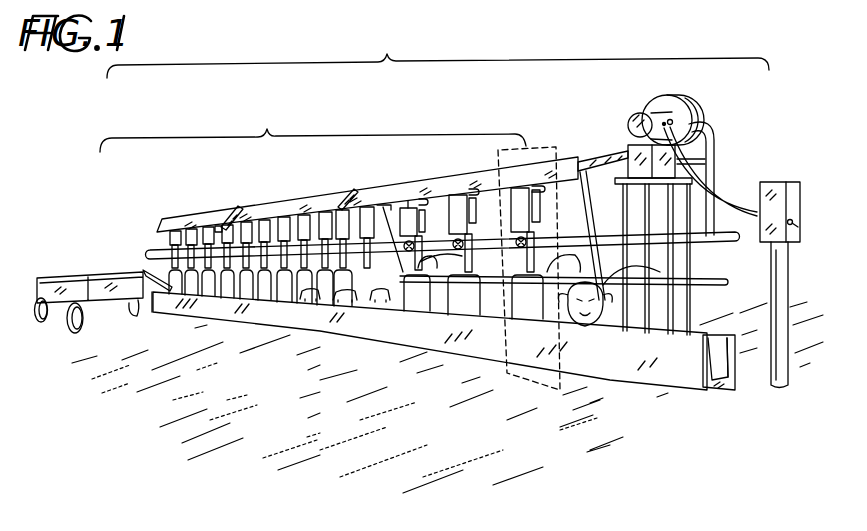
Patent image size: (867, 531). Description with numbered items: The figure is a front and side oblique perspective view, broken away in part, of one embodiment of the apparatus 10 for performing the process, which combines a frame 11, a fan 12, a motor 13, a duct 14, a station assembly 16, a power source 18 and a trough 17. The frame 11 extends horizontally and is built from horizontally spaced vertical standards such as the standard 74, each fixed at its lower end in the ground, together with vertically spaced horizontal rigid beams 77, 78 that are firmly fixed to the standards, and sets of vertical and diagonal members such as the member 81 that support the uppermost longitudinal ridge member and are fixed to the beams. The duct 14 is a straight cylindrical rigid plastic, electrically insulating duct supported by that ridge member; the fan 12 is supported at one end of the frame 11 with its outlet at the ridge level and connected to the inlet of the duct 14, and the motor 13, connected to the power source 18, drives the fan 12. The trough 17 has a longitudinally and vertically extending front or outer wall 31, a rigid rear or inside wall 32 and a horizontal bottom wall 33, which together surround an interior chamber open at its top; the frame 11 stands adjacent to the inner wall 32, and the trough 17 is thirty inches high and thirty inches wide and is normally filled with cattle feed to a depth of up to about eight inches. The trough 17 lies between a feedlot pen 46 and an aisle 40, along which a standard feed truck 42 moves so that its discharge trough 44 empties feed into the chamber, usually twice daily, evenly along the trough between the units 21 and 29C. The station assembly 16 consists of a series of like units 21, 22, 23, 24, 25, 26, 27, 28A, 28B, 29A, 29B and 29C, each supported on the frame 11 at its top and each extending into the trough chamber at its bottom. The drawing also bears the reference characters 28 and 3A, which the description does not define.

The apparatus 10 is at (438, 55).
The station assembly 16 is at (374, 214).
The fan 12 is at (673, 104).
The motor 13 is at (636, 121).
The duct 14 is at (603, 161).
The air duct 28 is at (731, 155).
The power source 18 is at (781, 192).
The unit 21 is at (521, 188).
The unit 22 is at (460, 195).
The unit 23 is at (407, 208).
The unit 24 is at (367, 207).
The unit 25 is at (326, 212).
The unit 26 is at (287, 217).
The unit 27 is at (267, 220).
The unit 28A is at (240, 212).
The unit 28B is at (218, 226).
The unit 29A is at (210, 232).
The unit 29B is at (180, 240).
The unit 29C is at (165, 242).
The horizontally extending beam 78 is at (612, 244).
The horizontally extending beam 77 is at (725, 283).
The feedlot pen 46 is at (807, 294).
The frame 11 is at (730, 297).
The feed truck 42 is at (118, 296).
The discharge trough 44 is at (150, 298).
The diagonally extending member 81 is at (402, 275).
The aisle 40 is at (413, 398).
The vertical standard 74 is at (670, 323).
The detail view region 3A is at (545, 407).
The front wall 31 is at (705, 380).
The bottom wall 33 is at (723, 385).
The rear wall 32 is at (742, 388).
The trough 17 is at (728, 405).